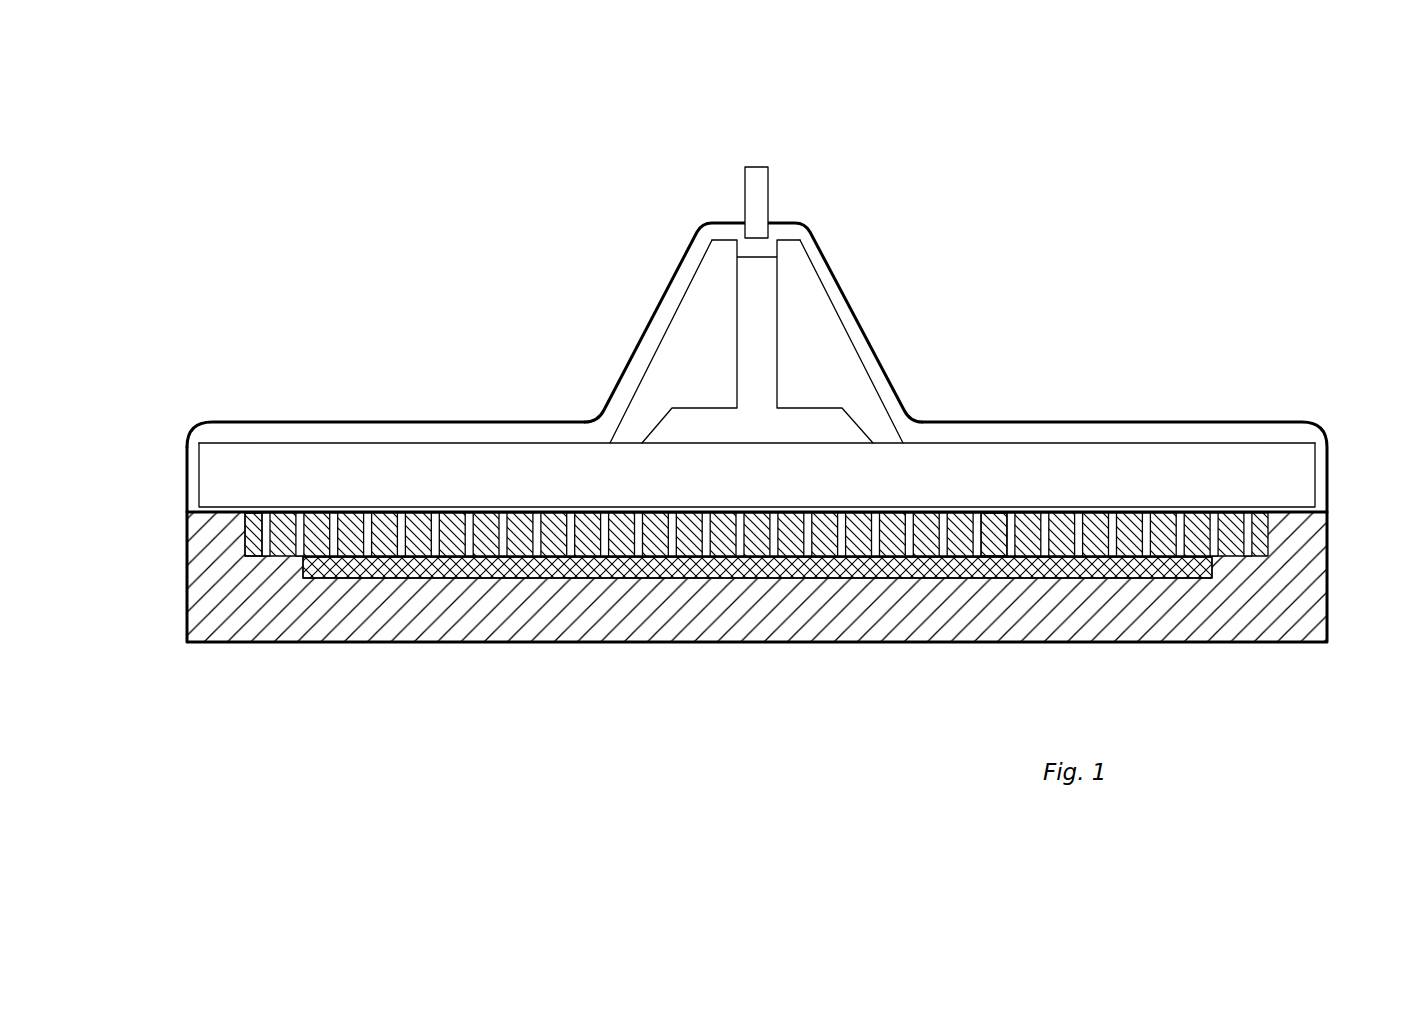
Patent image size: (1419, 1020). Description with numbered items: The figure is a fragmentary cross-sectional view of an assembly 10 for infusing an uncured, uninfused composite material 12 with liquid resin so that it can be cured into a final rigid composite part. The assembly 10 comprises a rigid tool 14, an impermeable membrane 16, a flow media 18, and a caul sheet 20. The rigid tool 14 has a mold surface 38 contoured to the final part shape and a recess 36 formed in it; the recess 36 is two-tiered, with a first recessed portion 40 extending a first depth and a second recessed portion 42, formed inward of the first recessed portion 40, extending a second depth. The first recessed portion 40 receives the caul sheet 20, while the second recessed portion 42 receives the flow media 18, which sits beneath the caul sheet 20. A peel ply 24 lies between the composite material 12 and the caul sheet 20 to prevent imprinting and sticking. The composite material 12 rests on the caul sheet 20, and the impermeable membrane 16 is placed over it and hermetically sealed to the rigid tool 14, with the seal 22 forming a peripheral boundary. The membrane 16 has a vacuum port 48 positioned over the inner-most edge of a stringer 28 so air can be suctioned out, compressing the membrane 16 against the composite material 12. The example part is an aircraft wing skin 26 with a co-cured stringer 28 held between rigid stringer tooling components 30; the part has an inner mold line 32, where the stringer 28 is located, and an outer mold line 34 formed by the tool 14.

The assembly 10 is at (958, 158).
The composite material 12 is at (1302, 477).
The rigid tool 14 is at (1233, 610).
The impermeable membrane 16 is at (703, 223).
The flow media 18 is at (947, 570).
The caul sheet 20 is at (992, 525).
The seal 22 is at (186, 511).
The peel ply 24 is at (752, 512).
The aircraft wing skin 26 is at (575, 472).
The stringer 28 is at (762, 303).
The rigid stringer tooling component 30 is at (685, 333).
The inner mold line 32 is at (500, 438).
The outer mold line 34 is at (730, 545).
The recess 36 is at (1090, 507).
The mold surface 38 is at (218, 512).
The first recessed portion 40 is at (247, 537).
The second recessed portion 42 is at (305, 565).
The vacuum port 48 is at (770, 192).